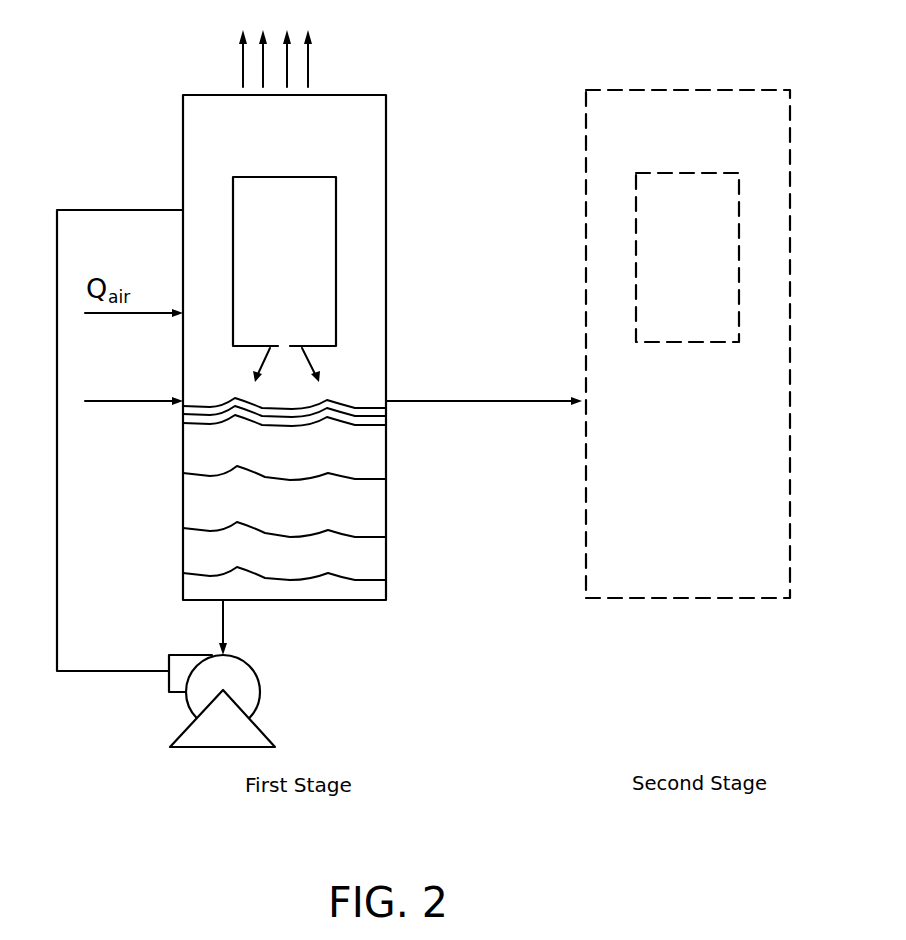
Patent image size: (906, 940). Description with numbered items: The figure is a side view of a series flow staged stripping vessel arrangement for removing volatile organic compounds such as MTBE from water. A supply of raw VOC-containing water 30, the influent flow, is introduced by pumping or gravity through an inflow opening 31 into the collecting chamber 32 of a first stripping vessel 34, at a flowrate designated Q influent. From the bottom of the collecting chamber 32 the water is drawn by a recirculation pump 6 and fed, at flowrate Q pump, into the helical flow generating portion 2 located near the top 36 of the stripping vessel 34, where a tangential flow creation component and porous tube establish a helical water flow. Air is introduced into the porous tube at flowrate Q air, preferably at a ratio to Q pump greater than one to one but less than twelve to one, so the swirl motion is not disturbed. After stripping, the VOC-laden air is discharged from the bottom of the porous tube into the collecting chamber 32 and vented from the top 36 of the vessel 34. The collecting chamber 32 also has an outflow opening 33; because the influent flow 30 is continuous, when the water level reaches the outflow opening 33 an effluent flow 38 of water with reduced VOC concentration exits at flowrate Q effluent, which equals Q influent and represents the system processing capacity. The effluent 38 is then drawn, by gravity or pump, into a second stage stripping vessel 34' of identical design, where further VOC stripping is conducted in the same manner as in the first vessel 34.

The first stripping vessel 34 is at (217, 322).
The top of the stripping vessel 36 is at (358, 95).
The helical flow generating portion 2 is at (325, 223).
The raw VOC-containing water 30 is at (110, 402).
The inflow opening 31 is at (183, 410).
The collecting chamber 32 is at (393, 478).
The outflow opening 33 is at (392, 397).
The effluent flow 38 is at (540, 397).
The recirculation pump 6 is at (268, 700).
The second stage stripping vessel 34' is at (703, 303).